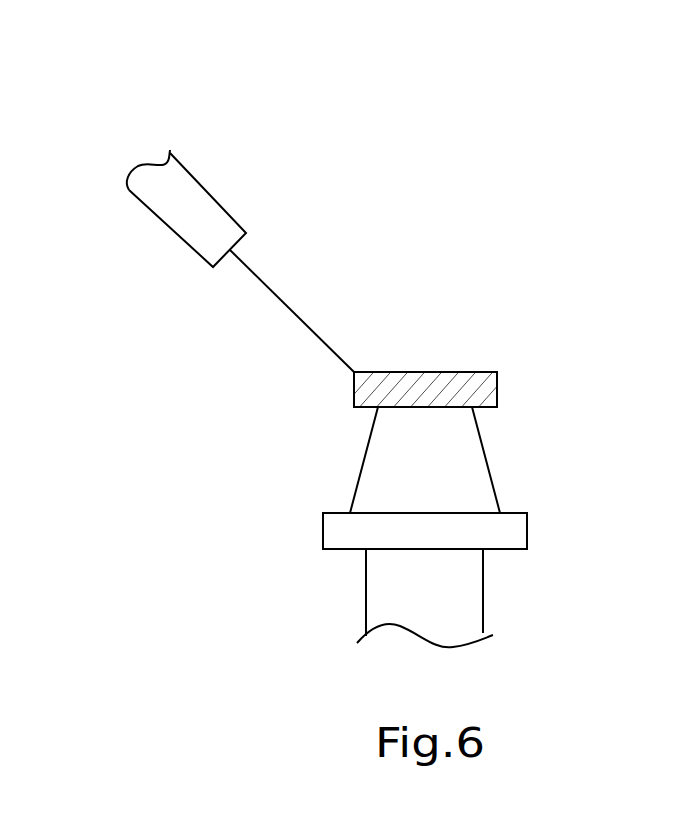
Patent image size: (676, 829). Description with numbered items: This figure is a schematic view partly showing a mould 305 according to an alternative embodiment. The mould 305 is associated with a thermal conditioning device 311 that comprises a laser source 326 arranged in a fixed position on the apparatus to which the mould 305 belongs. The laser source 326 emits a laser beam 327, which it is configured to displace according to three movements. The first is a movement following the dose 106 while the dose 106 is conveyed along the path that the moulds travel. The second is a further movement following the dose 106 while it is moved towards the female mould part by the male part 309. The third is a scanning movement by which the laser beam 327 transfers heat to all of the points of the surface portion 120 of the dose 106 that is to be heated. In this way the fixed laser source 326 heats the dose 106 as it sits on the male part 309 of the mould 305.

The laser source 326 is at (197, 187).
The laser beam 327 is at (297, 315).
The thermal conditioning device 311 is at (290, 245).
The surface portion 120 is at (398, 372).
The mould 305 is at (455, 310).
The dose 106 is at (462, 372).
The male part 309 is at (487, 468).